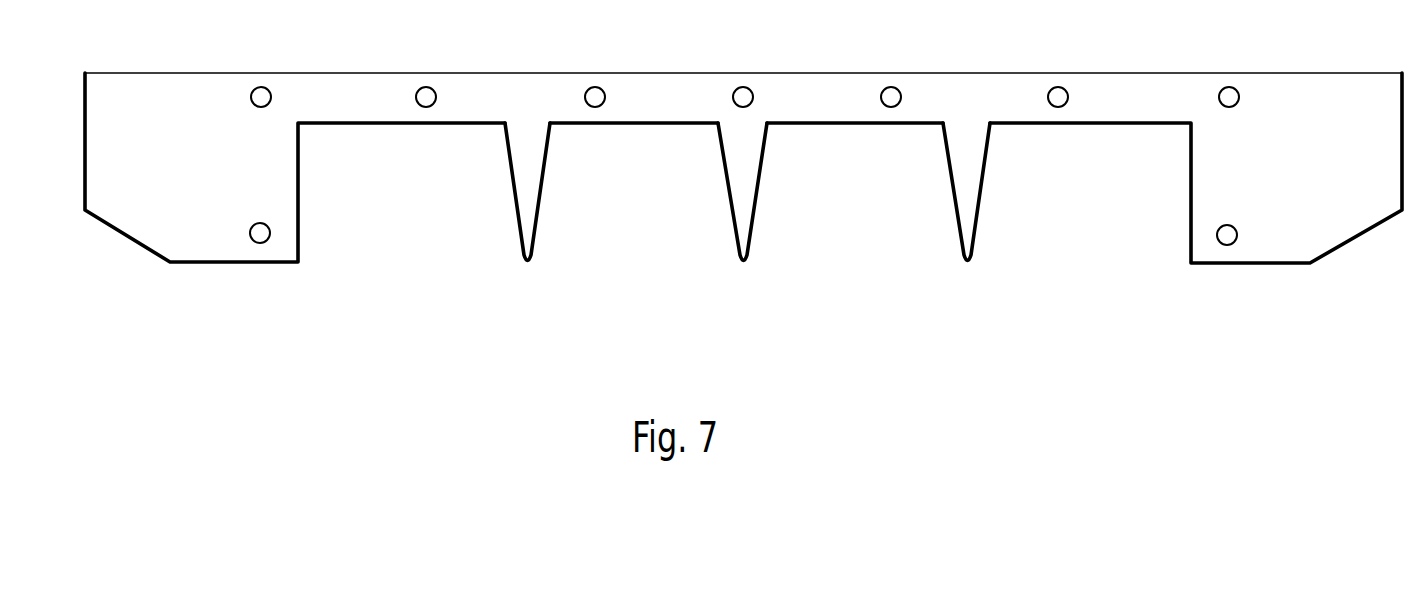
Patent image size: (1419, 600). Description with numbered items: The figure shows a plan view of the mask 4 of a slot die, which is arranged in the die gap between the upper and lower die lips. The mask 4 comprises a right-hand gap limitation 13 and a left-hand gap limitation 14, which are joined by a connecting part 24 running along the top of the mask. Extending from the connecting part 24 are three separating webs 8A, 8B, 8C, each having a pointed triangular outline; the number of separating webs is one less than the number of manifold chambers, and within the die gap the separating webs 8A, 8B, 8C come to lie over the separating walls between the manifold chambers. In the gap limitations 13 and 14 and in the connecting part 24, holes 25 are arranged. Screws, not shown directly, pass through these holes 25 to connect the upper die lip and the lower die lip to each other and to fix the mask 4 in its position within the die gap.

The mask 4 is at (815, 68).
The connecting part 24 is at (478, 97).
The left-hand gap limitation 14 is at (273, 190).
The right-hand gap limitation 13 is at (1217, 180).
The separating web 8A is at (968, 235).
The separating web 8B is at (744, 236).
The separating web 8C is at (529, 237).
The holes 25 is at (265, 92).